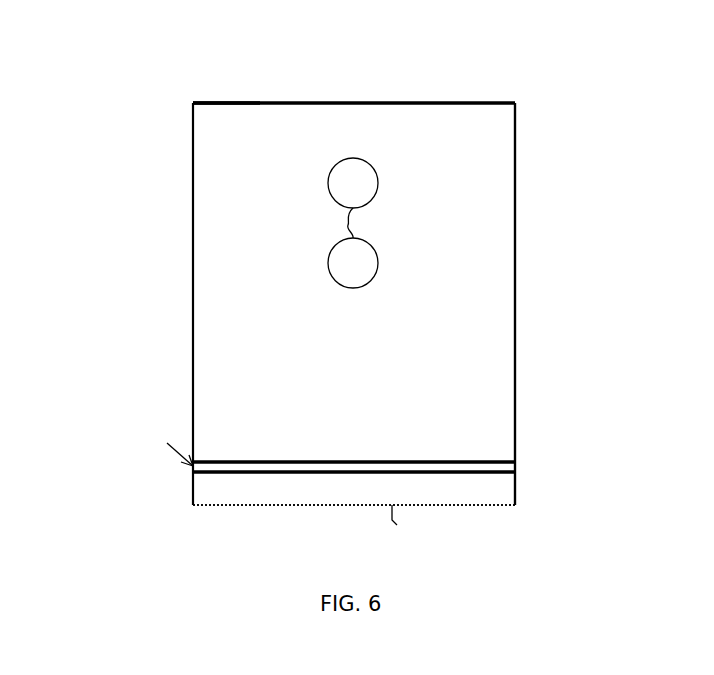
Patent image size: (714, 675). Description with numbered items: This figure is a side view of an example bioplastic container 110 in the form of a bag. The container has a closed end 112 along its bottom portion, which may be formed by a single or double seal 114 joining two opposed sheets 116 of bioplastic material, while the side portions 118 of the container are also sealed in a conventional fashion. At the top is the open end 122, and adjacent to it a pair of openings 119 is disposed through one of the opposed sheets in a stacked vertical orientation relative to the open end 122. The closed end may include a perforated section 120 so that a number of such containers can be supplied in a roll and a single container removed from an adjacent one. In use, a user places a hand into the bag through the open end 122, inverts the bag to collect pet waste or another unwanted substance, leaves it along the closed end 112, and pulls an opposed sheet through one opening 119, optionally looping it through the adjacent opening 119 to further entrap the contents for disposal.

The bioplastic container 110 is at (472, 93).
The closed end 112 is at (230, 480).
The single or double seal 114 is at (485, 458).
The opposed sheets 116 is at (492, 287).
The side portions 118 is at (515, 370).
The openings 119 is at (365, 263).
The perforated section 120 is at (372, 505).
The open end 122 is at (237, 101).